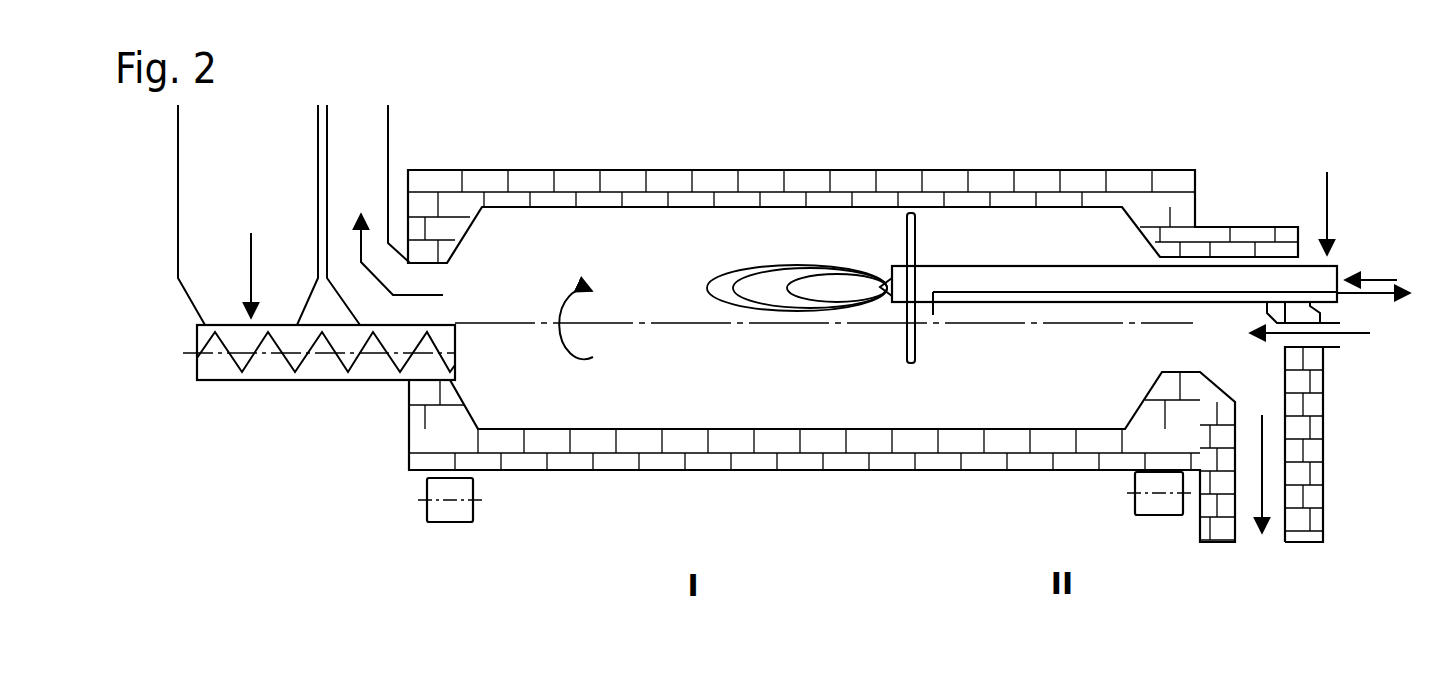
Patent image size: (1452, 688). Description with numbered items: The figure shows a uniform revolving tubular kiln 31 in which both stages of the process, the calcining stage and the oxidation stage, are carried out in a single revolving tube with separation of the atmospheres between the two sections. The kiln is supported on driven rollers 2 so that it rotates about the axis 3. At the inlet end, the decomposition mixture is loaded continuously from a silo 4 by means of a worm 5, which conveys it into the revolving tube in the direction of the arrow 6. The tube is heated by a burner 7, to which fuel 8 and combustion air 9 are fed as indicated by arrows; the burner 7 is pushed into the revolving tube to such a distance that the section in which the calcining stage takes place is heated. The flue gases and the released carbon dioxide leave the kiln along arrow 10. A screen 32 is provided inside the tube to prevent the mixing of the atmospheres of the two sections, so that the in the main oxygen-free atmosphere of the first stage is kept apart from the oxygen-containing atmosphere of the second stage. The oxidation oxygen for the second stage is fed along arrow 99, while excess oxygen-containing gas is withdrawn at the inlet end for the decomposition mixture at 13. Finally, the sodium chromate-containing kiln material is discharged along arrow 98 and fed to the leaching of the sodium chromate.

The driven rollers 2 is at (450, 522).
The axis 3 is at (672, 323).
The silo 4 is at (178, 232).
The worm 5 is at (303, 380).
The arrow 6 is at (251, 256).
The burner 7 is at (960, 266).
The fuel 8 is at (1375, 280).
The combustion air 9 is at (1327, 190).
The arrow 10 is at (370, 215).
The excess oxygen-containing gas withdrawal 13 is at (1394, 292).
The uniform revolving tubular kiln 31 is at (770, 470).
The screen 32 is at (915, 345).
The arrow 98 is at (1270, 435).
The arrow 99 is at (1329, 333).